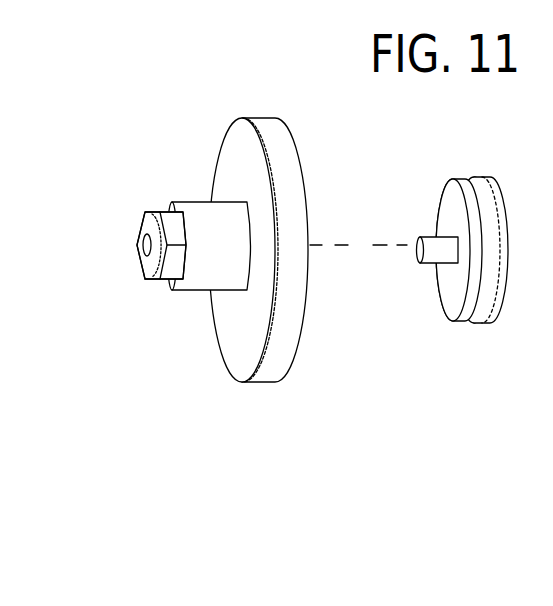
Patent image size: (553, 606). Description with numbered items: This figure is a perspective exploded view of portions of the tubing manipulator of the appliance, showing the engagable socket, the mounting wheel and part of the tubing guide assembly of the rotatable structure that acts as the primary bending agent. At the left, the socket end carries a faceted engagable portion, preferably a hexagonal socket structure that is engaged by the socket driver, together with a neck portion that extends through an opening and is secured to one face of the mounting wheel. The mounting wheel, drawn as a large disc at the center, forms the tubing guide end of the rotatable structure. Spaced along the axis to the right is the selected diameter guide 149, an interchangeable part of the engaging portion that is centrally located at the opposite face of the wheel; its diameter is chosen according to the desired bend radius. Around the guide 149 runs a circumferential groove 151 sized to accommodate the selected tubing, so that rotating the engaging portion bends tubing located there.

The selected diameter guide 149 is at (450, 202).
The circumferential groove 151 is at (480, 182).